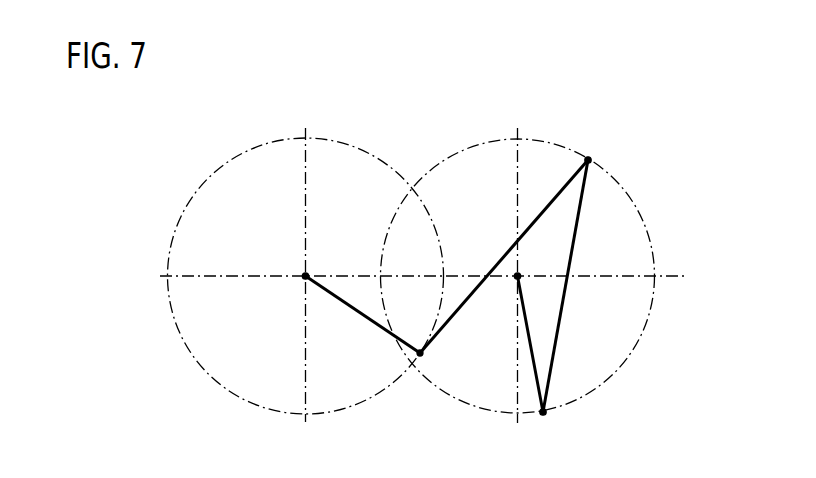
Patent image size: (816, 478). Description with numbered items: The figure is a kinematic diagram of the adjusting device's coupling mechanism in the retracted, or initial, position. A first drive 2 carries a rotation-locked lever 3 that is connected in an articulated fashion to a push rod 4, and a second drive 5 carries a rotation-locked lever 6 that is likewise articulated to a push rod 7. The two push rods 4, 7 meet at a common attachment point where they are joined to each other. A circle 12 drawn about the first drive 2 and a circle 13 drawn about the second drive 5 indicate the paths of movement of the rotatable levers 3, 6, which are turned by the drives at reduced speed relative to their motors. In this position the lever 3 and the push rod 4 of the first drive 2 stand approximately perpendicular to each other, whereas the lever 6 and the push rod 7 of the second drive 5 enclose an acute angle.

The first drive 2 is at (298, 288).
The rotation-locked lever 3 is at (362, 321).
The push rod 4 is at (502, 258).
The second drive 5 is at (520, 273).
The rotation-locked lever 6 is at (532, 358).
The push rod 7 is at (562, 309).
The circle 12 is at (178, 223).
The circle 13 is at (645, 333).